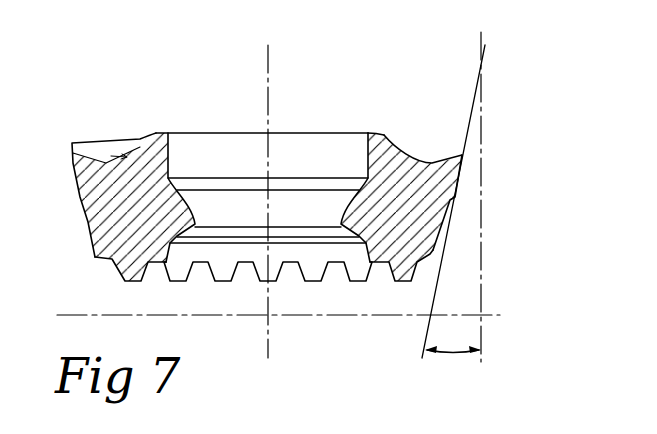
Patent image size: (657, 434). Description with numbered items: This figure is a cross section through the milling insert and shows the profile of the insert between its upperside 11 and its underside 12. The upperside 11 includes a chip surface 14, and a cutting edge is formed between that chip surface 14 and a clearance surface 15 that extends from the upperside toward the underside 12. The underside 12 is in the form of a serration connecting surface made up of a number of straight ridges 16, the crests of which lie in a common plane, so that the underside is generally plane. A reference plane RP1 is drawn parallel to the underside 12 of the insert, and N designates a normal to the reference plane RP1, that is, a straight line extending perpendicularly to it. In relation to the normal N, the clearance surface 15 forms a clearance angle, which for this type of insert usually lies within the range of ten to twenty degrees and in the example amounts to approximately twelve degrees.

The upperside 11 is at (296, 212).
The underside 12 is at (145, 284).
The chip surface 14 is at (448, 157).
The clearance surface 15 is at (461, 172).
The straight ridges 16 is at (361, 269).
The reference plane RP1 is at (251, 314).
The normal N is at (456, 181).